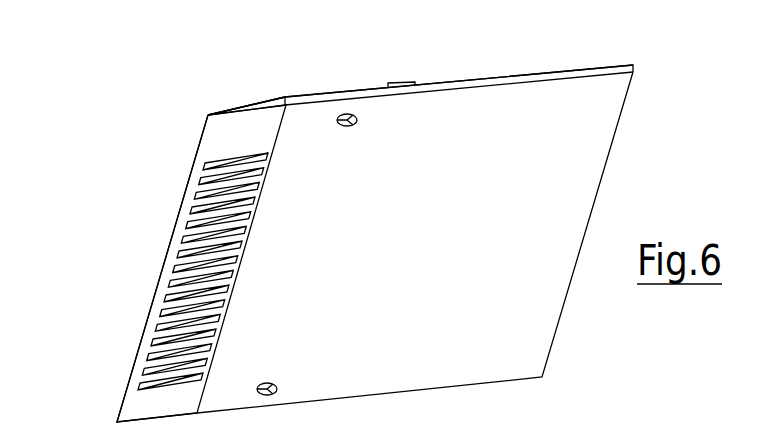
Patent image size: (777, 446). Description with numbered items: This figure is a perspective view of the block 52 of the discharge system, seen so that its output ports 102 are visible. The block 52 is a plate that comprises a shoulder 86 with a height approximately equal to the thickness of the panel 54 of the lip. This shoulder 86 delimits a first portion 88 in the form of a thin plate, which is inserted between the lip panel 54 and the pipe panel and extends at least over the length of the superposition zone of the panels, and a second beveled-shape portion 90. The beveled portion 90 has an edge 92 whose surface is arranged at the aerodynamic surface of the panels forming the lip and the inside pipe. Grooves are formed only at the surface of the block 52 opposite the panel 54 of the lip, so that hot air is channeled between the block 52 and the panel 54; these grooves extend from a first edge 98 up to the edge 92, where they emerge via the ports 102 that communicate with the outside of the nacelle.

The block 52 is at (262, 86).
The panel of the lip 54 is at (527, 107).
The shoulder 86 is at (298, 101).
The first portion 88 is at (388, 84).
The second beveled-shape portion 90 is at (258, 108).
The edge 92 is at (140, 400).
The first edge 98 is at (415, 82).
The ports 102 is at (172, 278).